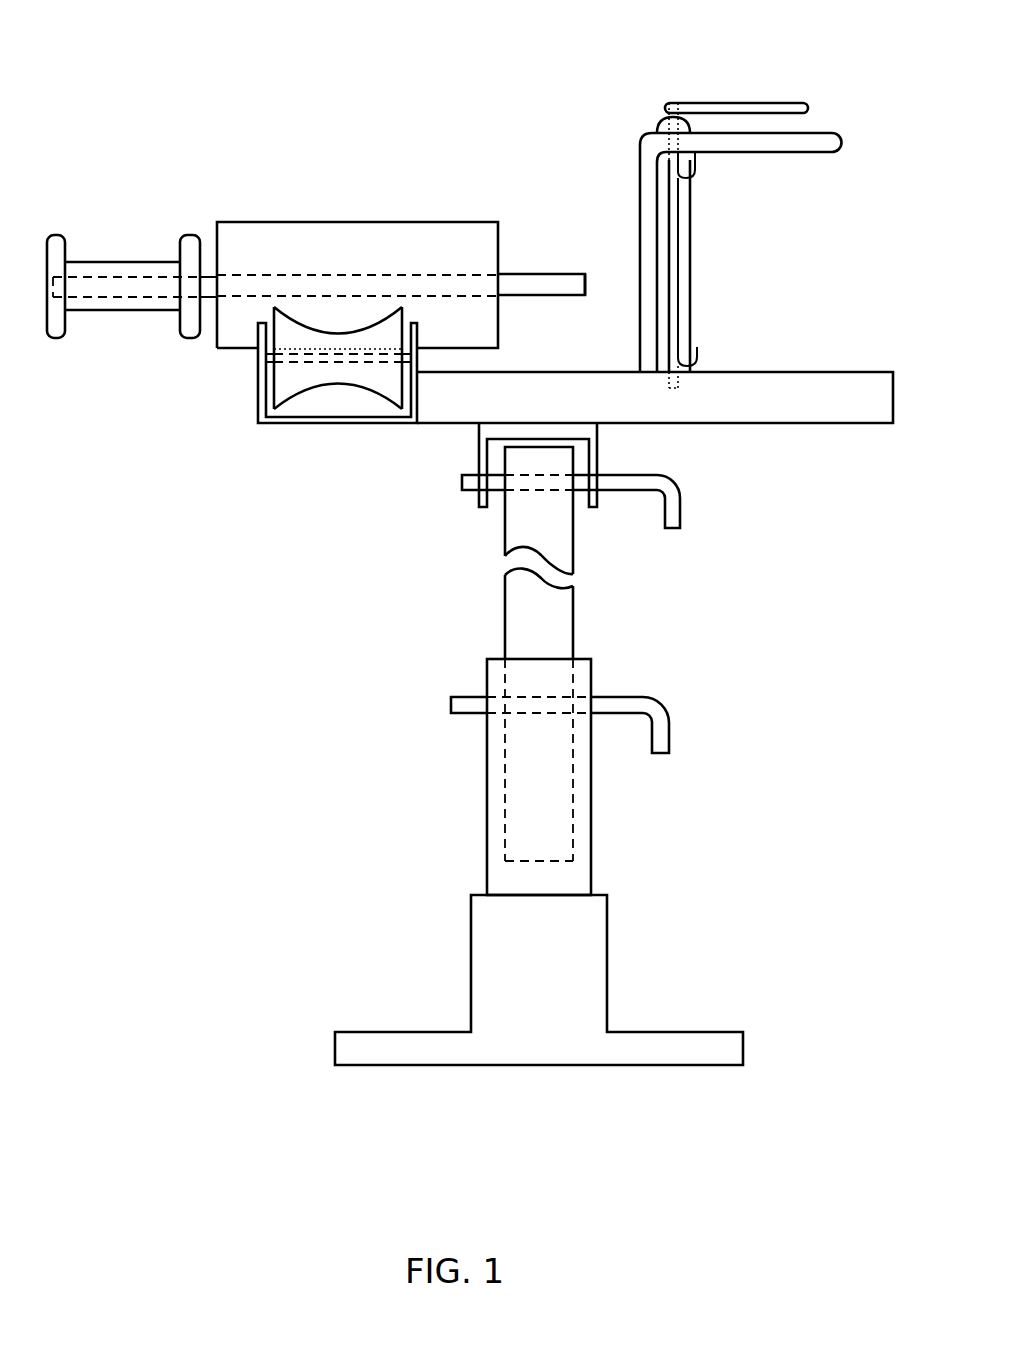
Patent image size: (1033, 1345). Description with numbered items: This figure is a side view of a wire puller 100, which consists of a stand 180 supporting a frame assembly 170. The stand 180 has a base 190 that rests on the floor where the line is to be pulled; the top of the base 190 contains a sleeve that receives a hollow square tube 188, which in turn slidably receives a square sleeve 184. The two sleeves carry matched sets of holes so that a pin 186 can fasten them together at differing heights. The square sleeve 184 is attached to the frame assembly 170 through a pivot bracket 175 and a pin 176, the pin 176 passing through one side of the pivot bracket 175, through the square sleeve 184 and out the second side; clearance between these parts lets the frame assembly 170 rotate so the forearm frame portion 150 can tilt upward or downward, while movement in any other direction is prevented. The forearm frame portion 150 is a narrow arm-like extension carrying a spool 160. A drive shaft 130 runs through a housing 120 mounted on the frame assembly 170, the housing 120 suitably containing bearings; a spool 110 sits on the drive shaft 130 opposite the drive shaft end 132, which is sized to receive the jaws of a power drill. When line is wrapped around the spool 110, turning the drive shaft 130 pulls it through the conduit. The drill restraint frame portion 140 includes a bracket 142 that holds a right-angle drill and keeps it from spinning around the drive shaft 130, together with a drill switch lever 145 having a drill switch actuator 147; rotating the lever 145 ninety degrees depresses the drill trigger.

The wire puller 100 is at (228, 38).
The spool 110 is at (131, 263).
The housing 120 is at (337, 222).
The drive shaft 130 is at (556, 274).
The drive shaft end 132 is at (585, 286).
The drill restraint frame portion 140 is at (887, 372).
The bracket 142 is at (640, 153).
The drill switch lever 145 is at (713, 103).
The drill switch actuator 147 is at (693, 257).
The forearm frame portion 150 is at (268, 427).
The spool 160 is at (361, 388).
The frame assembly 170 is at (757, 432).
The pivot bracket 175 is at (597, 439).
The pin 176 is at (681, 491).
The stand 180 is at (448, 481).
The square sleeve 184 is at (573, 618).
The pin 186 is at (670, 712).
The square tube 188 is at (591, 787).
The base 190 is at (471, 920).